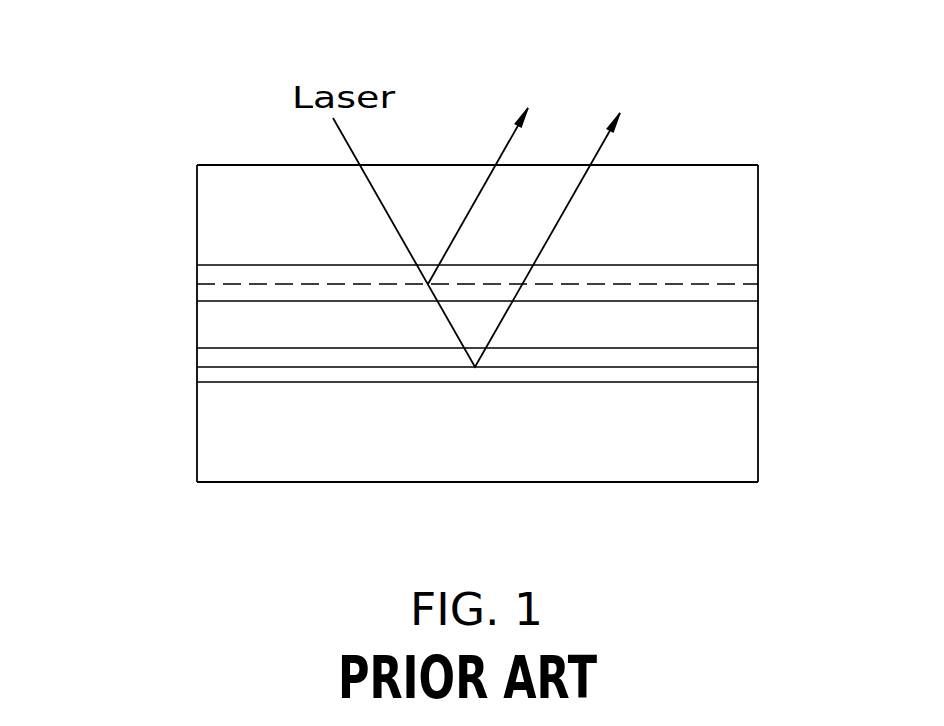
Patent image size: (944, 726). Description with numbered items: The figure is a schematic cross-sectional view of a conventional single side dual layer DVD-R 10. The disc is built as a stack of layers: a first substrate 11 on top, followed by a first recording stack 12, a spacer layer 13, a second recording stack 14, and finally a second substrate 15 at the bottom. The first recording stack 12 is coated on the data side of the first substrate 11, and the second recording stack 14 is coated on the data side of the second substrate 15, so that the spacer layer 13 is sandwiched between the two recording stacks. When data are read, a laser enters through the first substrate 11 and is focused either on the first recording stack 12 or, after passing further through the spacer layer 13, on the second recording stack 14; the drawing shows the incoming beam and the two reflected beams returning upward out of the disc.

The conventional single side single layer DVD-R 10 is at (163, 53).
The first substrate 11 is at (742, 232).
The first recording stack L0 12 is at (185, 265).
The spacer layer 13 is at (742, 337).
The second recording stack L1 14 is at (185, 347).
The second substrate 15 is at (742, 449).